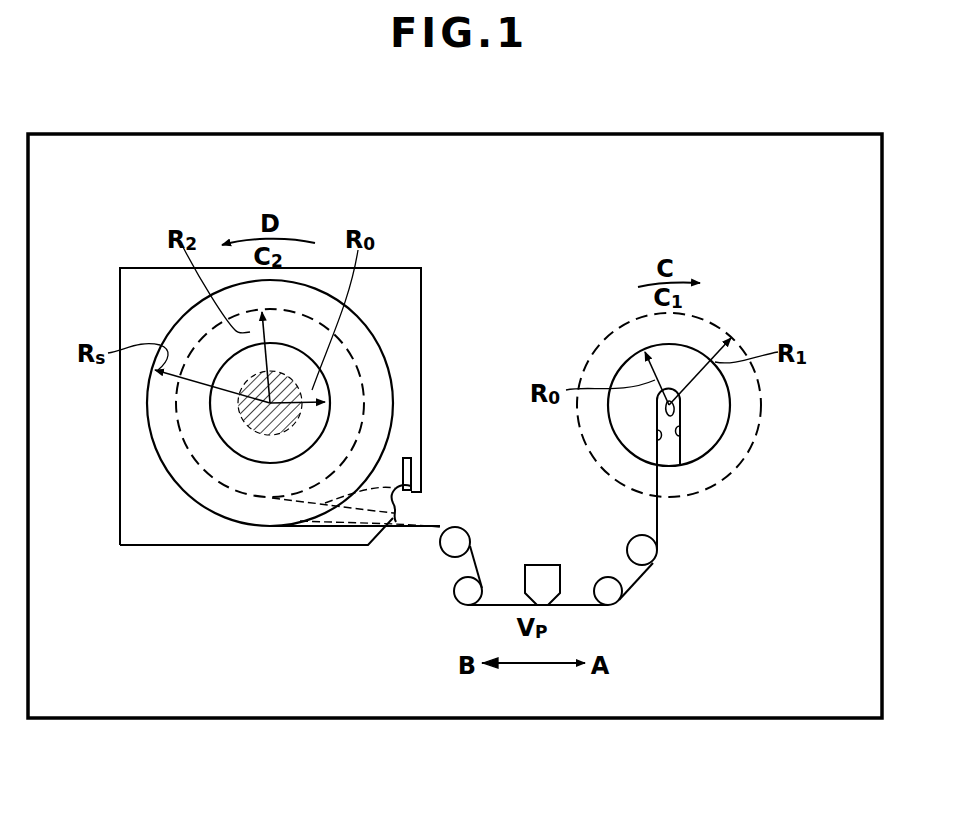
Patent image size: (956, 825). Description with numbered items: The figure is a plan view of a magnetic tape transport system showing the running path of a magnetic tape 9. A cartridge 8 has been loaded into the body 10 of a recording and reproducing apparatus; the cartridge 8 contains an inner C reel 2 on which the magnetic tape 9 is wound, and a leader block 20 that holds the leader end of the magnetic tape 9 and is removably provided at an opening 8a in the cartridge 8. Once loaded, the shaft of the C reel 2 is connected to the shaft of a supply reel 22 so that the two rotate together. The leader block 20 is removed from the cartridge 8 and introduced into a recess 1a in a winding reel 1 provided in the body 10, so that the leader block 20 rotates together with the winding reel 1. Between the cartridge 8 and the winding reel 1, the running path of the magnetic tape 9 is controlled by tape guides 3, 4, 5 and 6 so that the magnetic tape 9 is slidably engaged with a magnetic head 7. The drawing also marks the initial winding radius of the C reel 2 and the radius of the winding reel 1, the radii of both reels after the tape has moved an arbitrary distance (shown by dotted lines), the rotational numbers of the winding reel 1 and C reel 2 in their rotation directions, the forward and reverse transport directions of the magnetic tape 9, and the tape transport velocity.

The winding reel 1 is at (718, 395).
The recess 1a is at (681, 428).
The C reel 2 is at (257, 455).
The tape guide 3 is at (462, 540).
The tape guide 4 is at (462, 598).
The tape guide 5 is at (613, 596).
The tape guide 6 is at (648, 550).
The magnetic head 7 is at (545, 575).
The cartridge 8 is at (165, 535).
The opening 8a is at (425, 500).
The magnetic tape 9 is at (385, 395).
The body 10 is at (822, 705).
The leader block 20 is at (372, 530).
The supply reel 22 is at (276, 436).